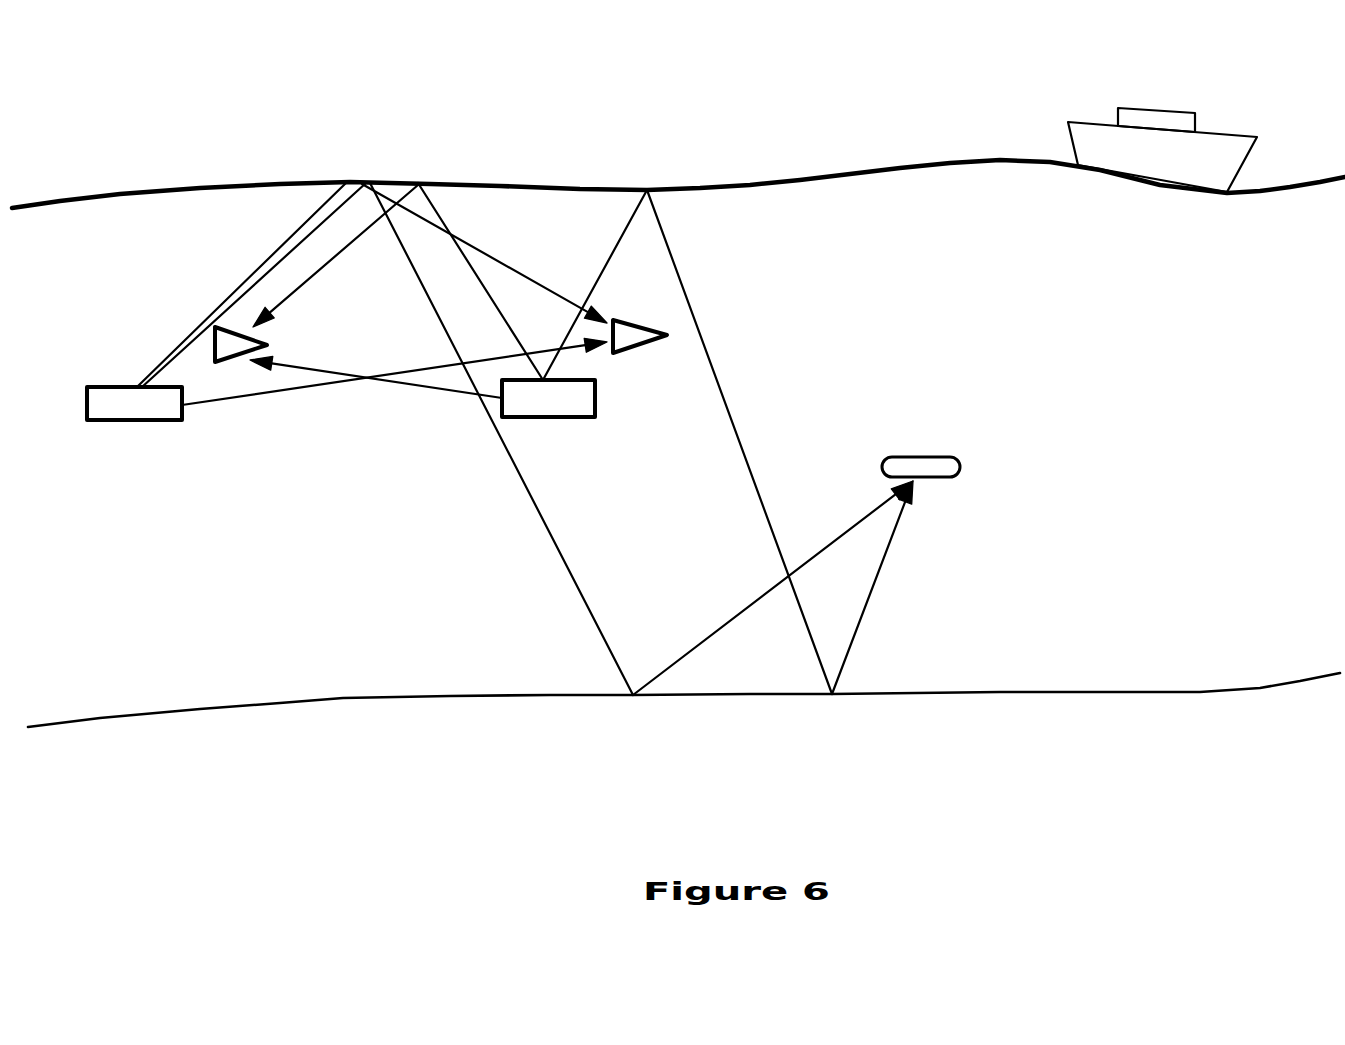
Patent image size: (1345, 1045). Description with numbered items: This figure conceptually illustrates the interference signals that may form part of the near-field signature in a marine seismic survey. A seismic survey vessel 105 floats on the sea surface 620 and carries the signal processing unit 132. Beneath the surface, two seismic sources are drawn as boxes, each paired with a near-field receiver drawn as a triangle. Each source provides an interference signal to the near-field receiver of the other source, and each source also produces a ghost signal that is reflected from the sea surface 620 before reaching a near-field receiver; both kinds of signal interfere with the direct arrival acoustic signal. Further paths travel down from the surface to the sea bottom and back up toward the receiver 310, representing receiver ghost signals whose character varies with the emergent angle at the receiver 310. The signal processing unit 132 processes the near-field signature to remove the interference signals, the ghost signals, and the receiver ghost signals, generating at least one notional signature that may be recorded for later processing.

The seismic survey vessel 105 is at (1232, 132).
The signal processing unit 132 is at (1160, 108).
The receiver 310 is at (920, 480).
The sea surface 620 is at (593, 188).